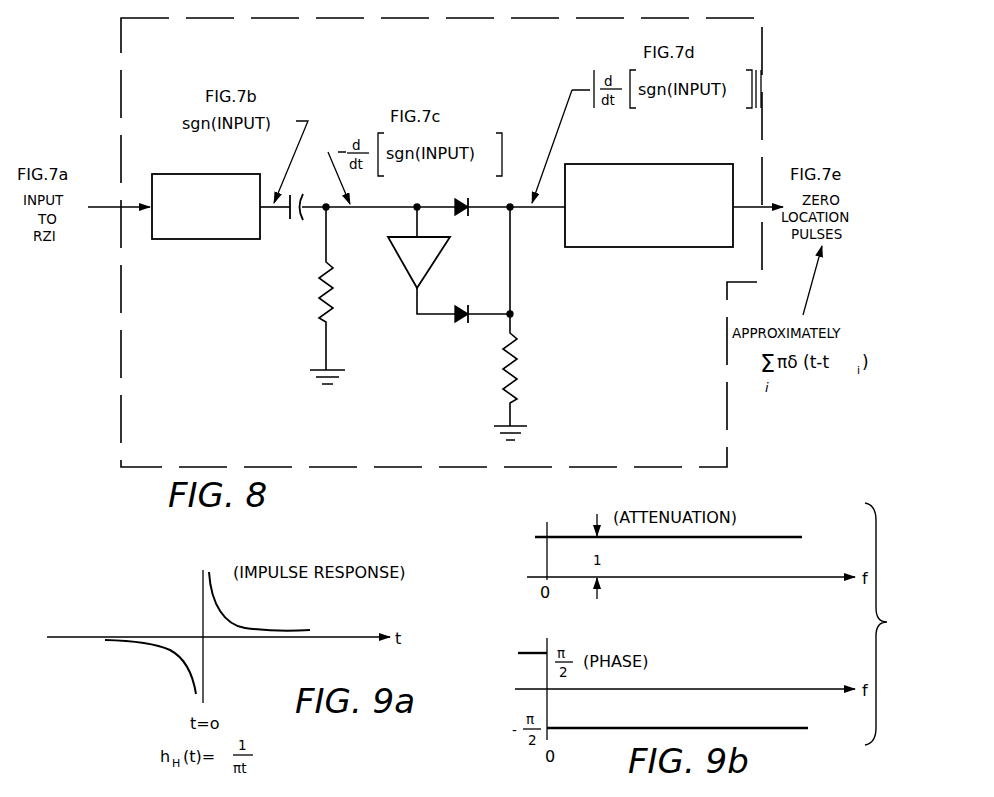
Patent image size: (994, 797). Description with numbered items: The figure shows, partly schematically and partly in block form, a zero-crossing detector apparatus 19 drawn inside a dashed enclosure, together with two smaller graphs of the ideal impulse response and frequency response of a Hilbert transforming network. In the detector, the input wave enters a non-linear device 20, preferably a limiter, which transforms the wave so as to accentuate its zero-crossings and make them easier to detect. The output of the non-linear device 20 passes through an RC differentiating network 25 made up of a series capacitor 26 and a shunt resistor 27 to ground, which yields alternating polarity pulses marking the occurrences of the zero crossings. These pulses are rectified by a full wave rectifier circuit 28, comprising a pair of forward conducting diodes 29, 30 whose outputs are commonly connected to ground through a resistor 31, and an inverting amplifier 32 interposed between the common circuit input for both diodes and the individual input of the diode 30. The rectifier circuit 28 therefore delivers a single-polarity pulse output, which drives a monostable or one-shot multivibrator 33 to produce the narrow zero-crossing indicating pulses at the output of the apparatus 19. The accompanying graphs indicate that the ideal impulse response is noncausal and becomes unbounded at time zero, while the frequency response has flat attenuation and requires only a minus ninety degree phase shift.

The zero-crossing detector apparatus 19 is at (763, 32).
The non-linear device 20 is at (210, 240).
The RC differentiating network 25 is at (292, 289).
The capacitor 26 is at (290, 238).
The resistor 27 is at (318, 312).
The full wave rectifier circuit 28 is at (436, 271).
The diode 29 is at (463, 213).
The diode 30 is at (484, 290).
The resistor 31 is at (502, 389).
The inverting amplifier 32 is at (419, 204).
The monostable multivibrator 33 is at (664, 248).